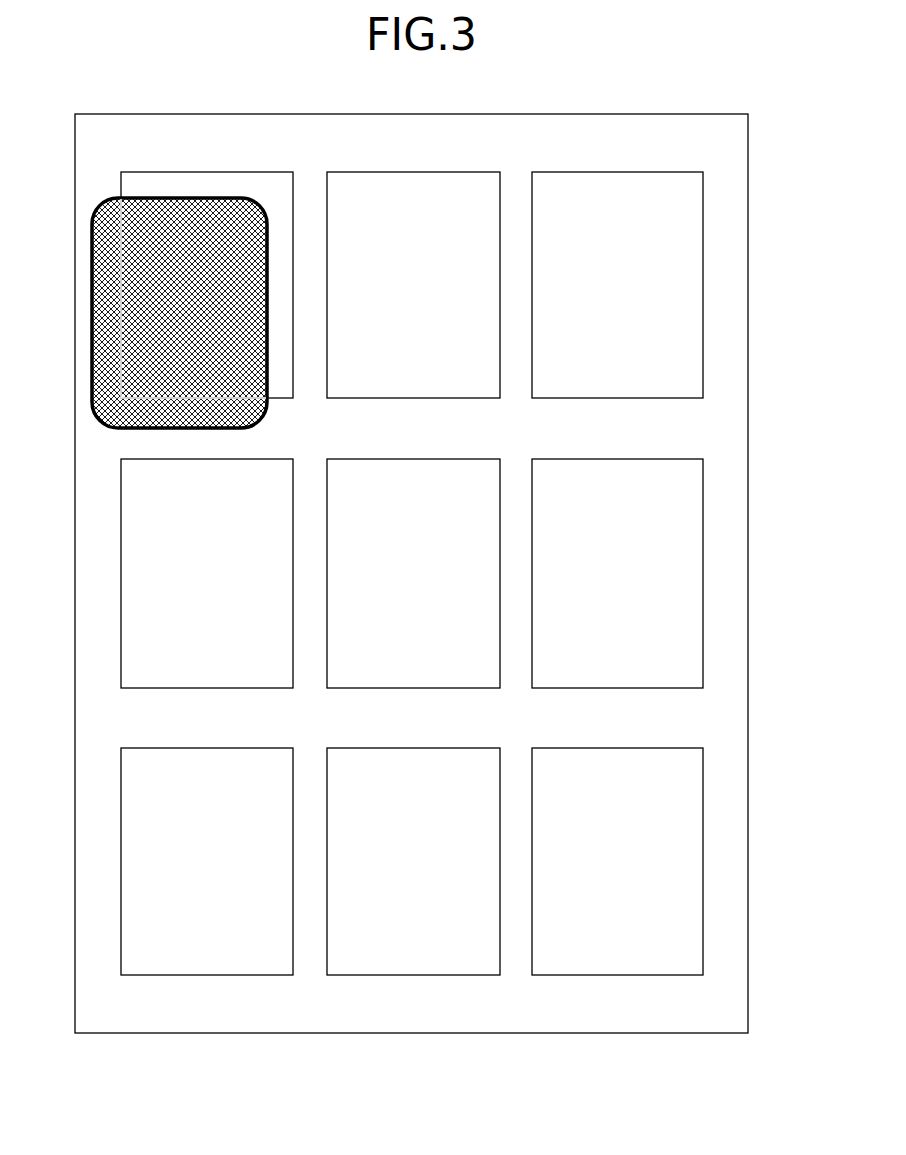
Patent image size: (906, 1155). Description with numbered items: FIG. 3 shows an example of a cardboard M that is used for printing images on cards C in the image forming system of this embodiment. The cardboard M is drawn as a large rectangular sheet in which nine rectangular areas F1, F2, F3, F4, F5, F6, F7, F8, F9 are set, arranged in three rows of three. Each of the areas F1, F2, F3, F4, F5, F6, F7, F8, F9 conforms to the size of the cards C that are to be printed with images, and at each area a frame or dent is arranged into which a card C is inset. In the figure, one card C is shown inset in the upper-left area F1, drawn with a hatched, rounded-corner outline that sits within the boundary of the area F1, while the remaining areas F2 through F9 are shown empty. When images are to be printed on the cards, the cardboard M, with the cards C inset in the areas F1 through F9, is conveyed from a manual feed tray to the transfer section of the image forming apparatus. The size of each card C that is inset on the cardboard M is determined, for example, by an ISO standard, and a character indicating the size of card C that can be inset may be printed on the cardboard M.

The cardboard M is at (748, 172).
The card C is at (92, 302).
The area F1 is at (222, 172).
The area F2 is at (427, 172).
The area F3 is at (630, 172).
The area F4 is at (248, 459).
The area F5 is at (428, 459).
The area F6 is at (630, 459).
The area F7 is at (226, 748).
The area F8 is at (428, 748).
The area F9 is at (630, 748).